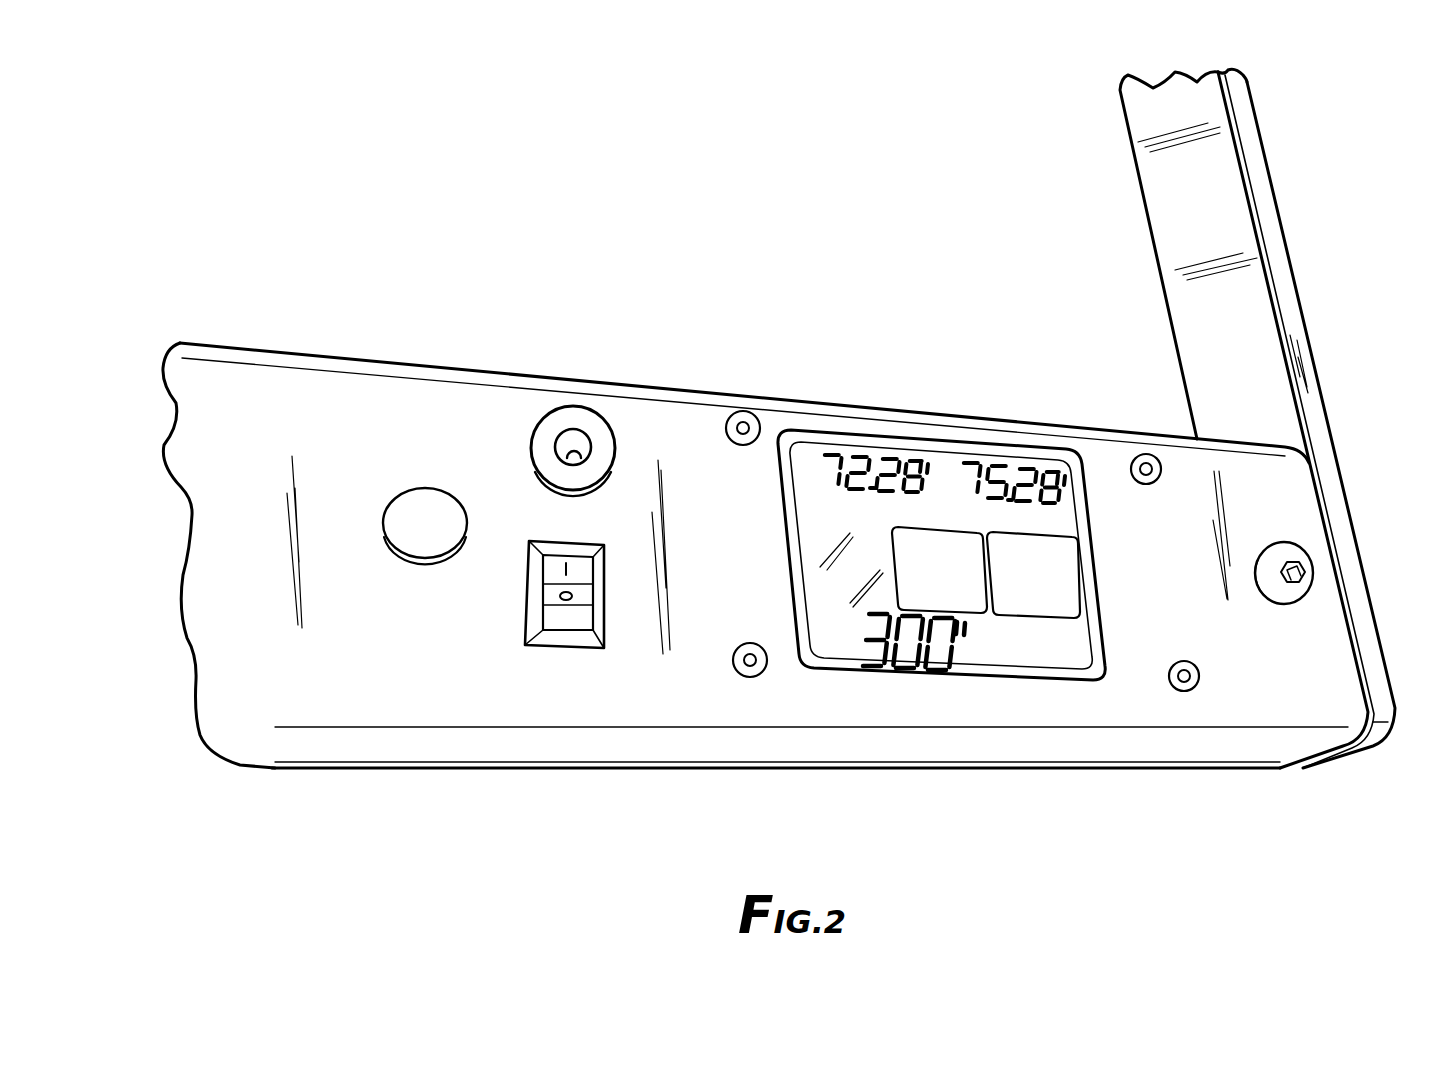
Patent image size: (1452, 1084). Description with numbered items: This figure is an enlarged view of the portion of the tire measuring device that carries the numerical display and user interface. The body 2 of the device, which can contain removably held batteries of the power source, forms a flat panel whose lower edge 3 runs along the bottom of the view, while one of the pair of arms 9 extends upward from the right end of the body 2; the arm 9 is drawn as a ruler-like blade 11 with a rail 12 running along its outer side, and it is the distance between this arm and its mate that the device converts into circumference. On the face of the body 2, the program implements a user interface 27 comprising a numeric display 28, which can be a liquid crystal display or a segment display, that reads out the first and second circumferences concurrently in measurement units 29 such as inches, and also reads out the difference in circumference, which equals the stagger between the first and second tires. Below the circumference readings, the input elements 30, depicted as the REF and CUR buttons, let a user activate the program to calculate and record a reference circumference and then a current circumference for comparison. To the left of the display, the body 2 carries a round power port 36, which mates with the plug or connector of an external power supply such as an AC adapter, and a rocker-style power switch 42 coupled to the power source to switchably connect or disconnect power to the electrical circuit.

The body 2 is at (808, 784).
The base edge of device body 3 is at (1168, 770).
The arm 9 is at (1240, 418).
The ruler blade 11 is at (1170, 188).
The rail 12 is at (1267, 165).
The user interface 27 is at (945, 437).
The numeric display 28 is at (940, 463).
The measurement units 29 is at (840, 457).
The input element 30 is at (917, 548).
The power port 36 is at (565, 417).
The power switch 42 is at (568, 617).